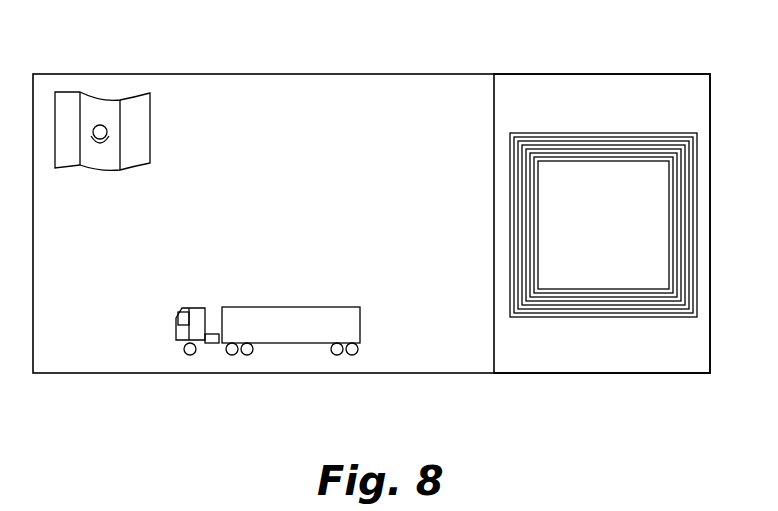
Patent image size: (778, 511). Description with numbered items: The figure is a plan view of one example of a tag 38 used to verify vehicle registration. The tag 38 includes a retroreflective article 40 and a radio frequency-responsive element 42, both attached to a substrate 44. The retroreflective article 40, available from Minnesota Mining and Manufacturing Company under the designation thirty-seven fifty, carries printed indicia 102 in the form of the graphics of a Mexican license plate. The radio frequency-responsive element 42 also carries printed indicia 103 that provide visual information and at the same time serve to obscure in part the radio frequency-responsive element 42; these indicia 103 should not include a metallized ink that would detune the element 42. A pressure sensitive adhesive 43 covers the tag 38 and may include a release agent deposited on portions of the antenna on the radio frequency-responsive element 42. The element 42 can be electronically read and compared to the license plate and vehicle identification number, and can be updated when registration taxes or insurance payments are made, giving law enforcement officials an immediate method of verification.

The tag 38 is at (727, 76).
The retroreflective article 40 is at (390, 372).
The radio frequency-responsive element 42 is at (695, 263).
The pressure sensitive adhesive 43 is at (600, 85).
The substrate 44 is at (567, 372).
The printed indicia 102 is at (388, 103).
The printed indicia 103 is at (650, 136).